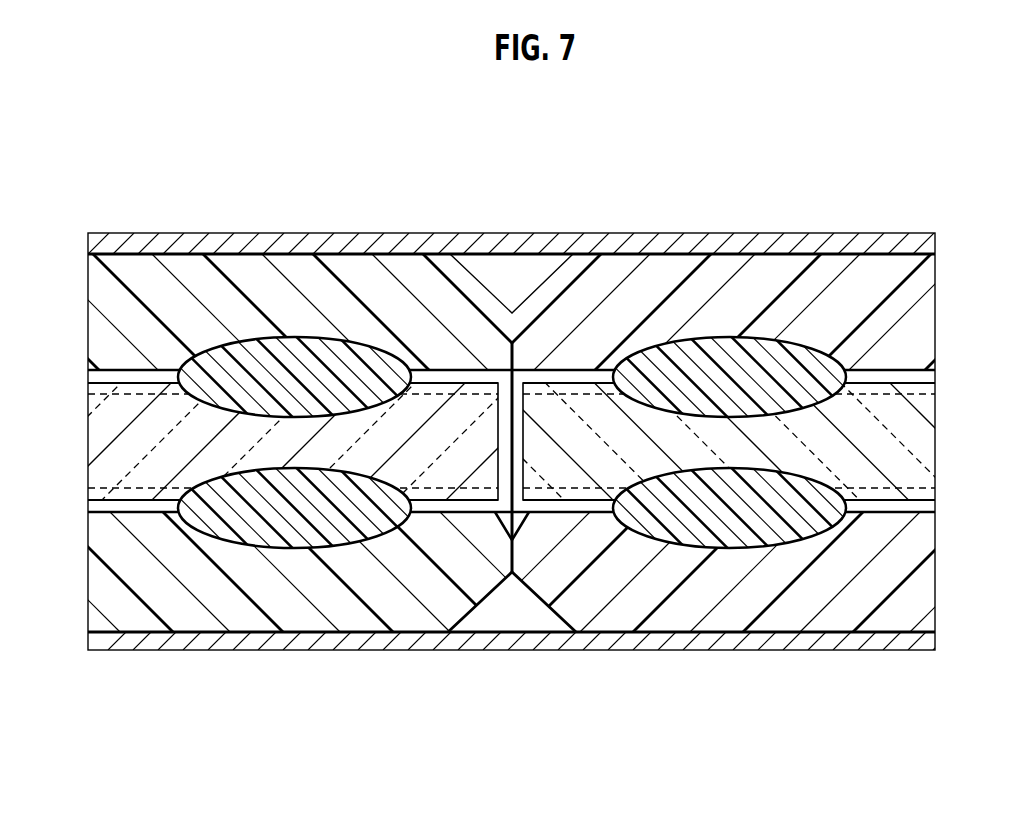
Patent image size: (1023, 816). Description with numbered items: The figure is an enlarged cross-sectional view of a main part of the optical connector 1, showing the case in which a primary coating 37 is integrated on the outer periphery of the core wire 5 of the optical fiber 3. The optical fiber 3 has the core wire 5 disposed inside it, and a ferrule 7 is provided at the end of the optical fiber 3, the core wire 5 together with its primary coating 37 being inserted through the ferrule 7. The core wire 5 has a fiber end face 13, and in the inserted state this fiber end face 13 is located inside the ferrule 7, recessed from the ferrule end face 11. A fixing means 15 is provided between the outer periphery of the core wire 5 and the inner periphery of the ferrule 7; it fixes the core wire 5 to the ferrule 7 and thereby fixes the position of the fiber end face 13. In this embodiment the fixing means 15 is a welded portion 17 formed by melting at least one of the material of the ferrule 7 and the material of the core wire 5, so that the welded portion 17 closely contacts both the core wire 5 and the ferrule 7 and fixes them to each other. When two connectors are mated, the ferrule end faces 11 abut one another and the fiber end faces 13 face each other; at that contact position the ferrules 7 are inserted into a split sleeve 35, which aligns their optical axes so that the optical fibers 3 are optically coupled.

The optical connector 1 is at (517, 153).
The optical fiber 3 is at (146, 382).
The core wire 5 is at (120, 447).
The ferrule 7 is at (268, 272).
The ferrule end face 11 is at (513, 353).
The fiber end face 13 is at (523, 422).
The fixing means 15 is at (758, 330).
The welded portion 17 is at (298, 527).
The split sleeve 35 is at (343, 247).
The primary coating 37 is at (150, 488).